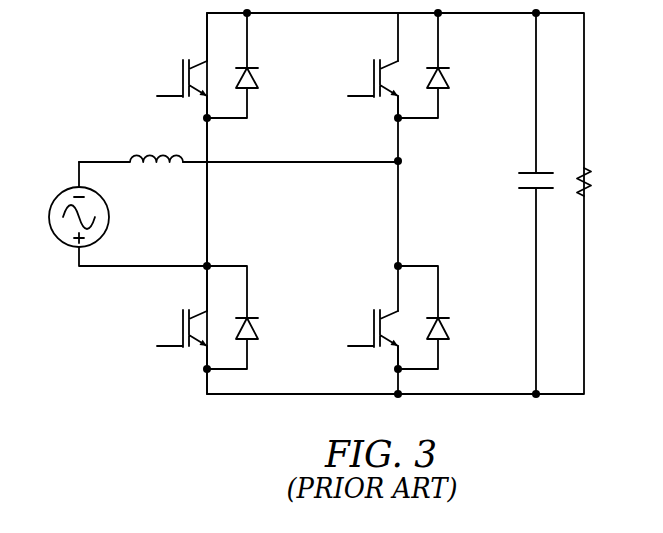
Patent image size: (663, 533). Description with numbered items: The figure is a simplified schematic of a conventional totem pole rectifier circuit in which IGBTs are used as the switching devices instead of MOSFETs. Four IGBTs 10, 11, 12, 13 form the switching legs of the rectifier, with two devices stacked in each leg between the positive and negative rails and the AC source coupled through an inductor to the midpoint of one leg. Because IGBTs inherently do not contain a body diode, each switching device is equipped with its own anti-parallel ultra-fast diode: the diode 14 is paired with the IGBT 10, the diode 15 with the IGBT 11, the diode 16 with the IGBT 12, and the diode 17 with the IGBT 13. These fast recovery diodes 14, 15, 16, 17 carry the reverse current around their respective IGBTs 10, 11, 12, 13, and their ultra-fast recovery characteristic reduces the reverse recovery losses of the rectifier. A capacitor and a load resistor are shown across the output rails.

The IGBT 10 is at (164, 62).
The IGBT 11 is at (165, 315).
The IGBT 12 is at (363, 61).
The IGBT 13 is at (363, 316).
The anti-parallel ultra-fast diode 14 is at (258, 94).
The anti-parallel ultra-fast diode 15 is at (258, 345).
The anti-parallel ultra-fast diode 16 is at (449, 94).
The anti-parallel ultra-fast diode 17 is at (449, 347).